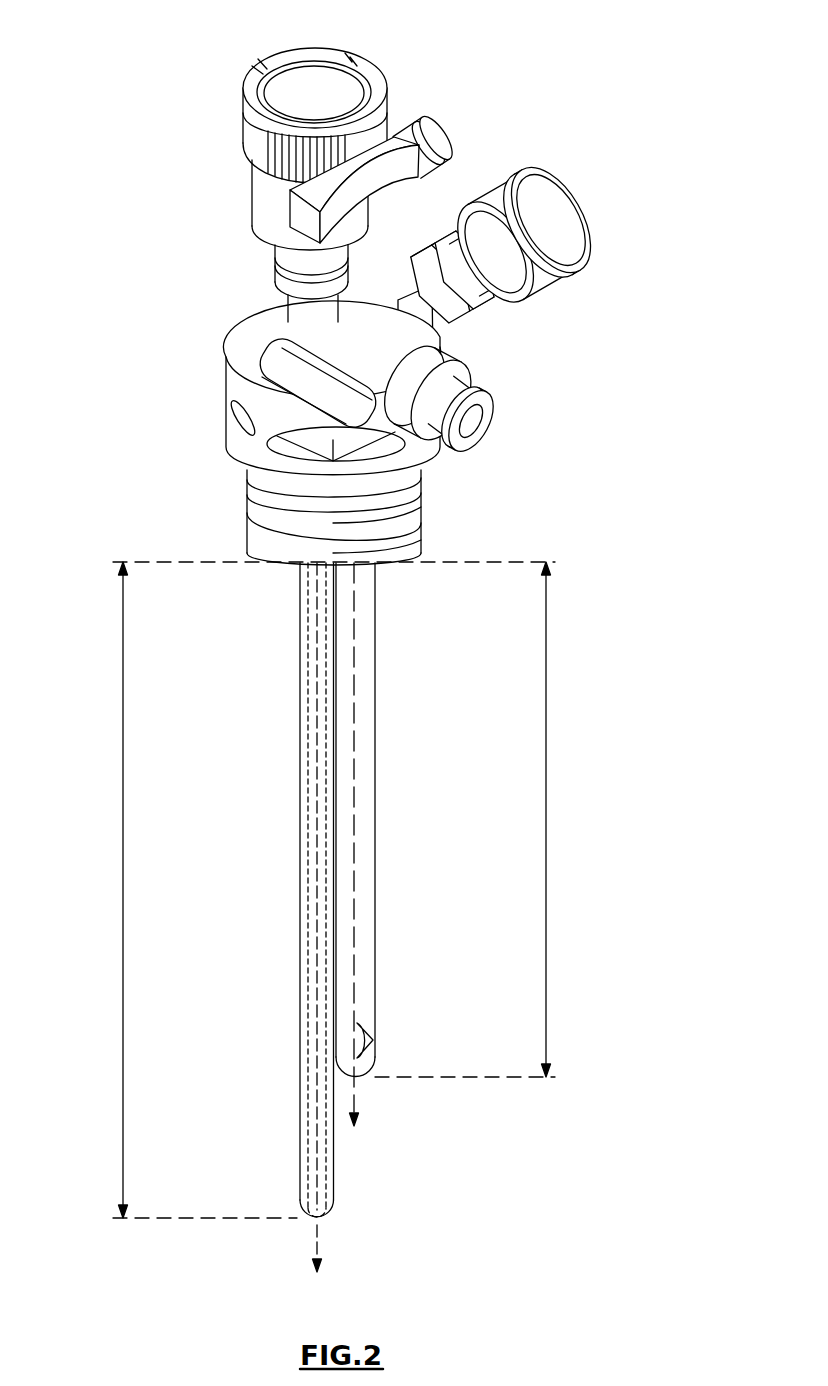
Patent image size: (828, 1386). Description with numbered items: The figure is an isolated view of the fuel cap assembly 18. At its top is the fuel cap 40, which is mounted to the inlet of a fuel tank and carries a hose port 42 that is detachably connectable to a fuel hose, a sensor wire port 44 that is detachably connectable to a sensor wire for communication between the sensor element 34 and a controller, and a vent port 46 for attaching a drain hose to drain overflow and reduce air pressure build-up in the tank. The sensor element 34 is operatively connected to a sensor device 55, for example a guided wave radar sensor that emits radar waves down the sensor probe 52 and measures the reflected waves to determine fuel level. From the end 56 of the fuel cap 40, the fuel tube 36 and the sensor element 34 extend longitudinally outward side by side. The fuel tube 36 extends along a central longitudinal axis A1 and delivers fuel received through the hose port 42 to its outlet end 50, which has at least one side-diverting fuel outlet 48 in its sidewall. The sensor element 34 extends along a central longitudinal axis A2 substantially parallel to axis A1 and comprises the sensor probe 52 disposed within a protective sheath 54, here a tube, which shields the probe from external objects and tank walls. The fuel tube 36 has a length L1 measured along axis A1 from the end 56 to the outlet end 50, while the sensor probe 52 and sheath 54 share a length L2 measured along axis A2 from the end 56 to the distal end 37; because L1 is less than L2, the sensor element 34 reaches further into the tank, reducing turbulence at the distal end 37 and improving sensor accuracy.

The fuel cap assembly 18 is at (640, 48).
The sensor element 34 is at (284, 730).
The fuel tube 36 is at (378, 748).
The distal end 37 is at (343, 1240).
The fuel cap 40 is at (190, 432).
The hose port 42 is at (590, 180).
The sensor wire port 44 is at (452, 112).
The vent port 46 is at (508, 458).
The side-diverting fuel outlet 48 is at (385, 1028).
The outlet end 50 is at (375, 1105).
The sensor probe 52 is at (308, 928).
The protective sheath 54 is at (300, 860).
The sensor device 55 is at (262, 211).
The end of the fuel cap 56 is at (285, 580).
The central longitudinal axis A1 is at (355, 882).
The central longitudinal axis A2 is at (315, 1184).
The length of the fuel tube L1 is at (546, 828).
The length of the sensor probe and sheath L2 is at (123, 826).